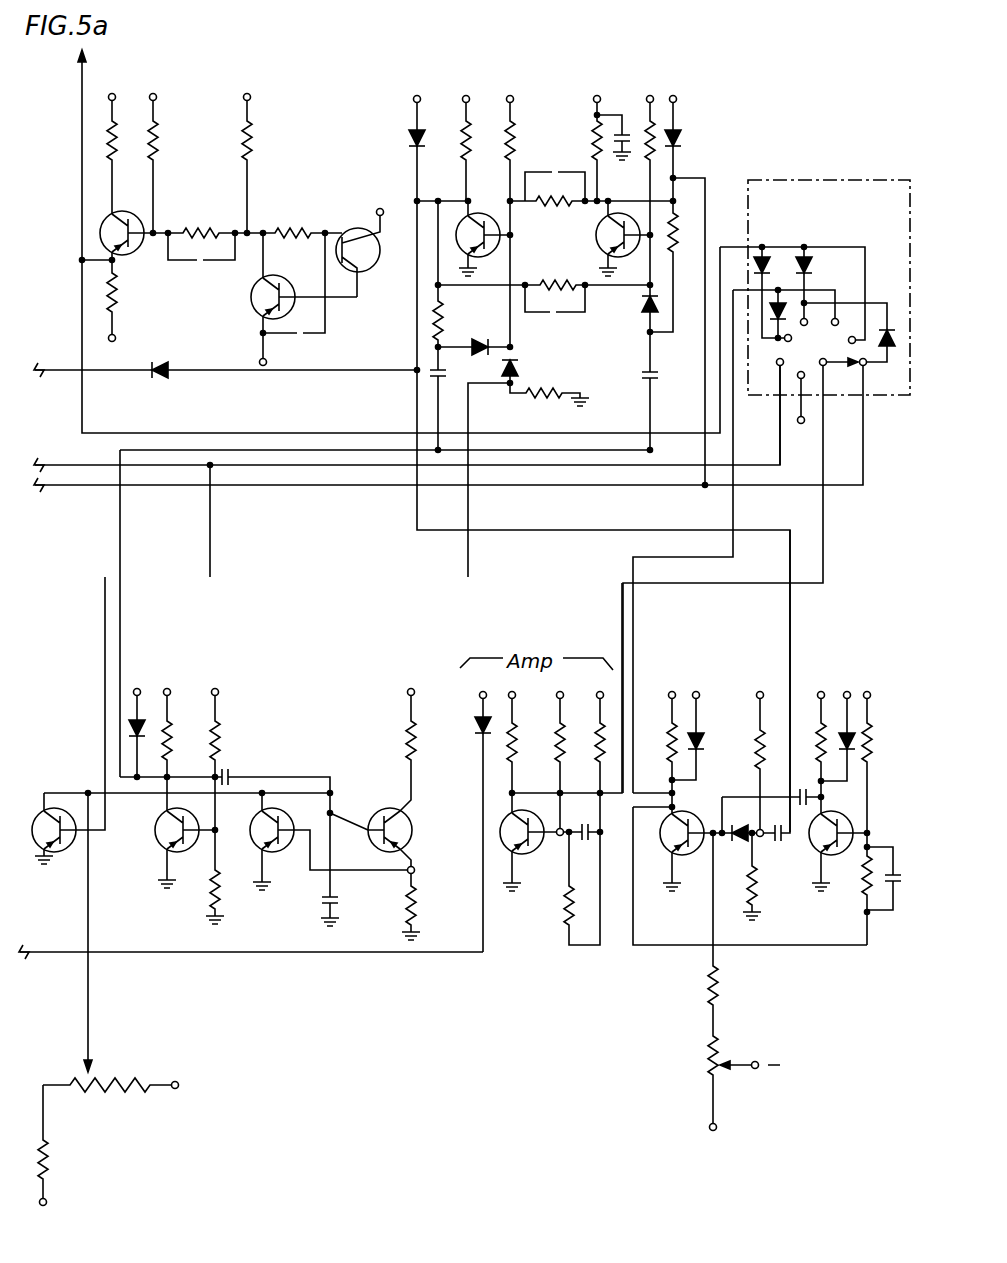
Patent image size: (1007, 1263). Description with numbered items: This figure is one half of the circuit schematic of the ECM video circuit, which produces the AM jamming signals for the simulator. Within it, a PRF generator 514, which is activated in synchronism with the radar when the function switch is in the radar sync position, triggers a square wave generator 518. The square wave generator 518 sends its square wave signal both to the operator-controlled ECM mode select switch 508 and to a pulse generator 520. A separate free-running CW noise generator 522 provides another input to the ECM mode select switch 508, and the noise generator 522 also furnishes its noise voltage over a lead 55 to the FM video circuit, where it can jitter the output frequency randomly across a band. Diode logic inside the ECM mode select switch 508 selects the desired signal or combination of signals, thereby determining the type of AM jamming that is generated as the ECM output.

The lead 55 is at (82, 161).
The noise generator 522 is at (390, 80).
The square wave generator 518 is at (690, 60).
The ECM mode select switch 508 is at (882, 147).
The PRF generator 514 is at (440, 667).
The pulse generator 520 is at (902, 670).